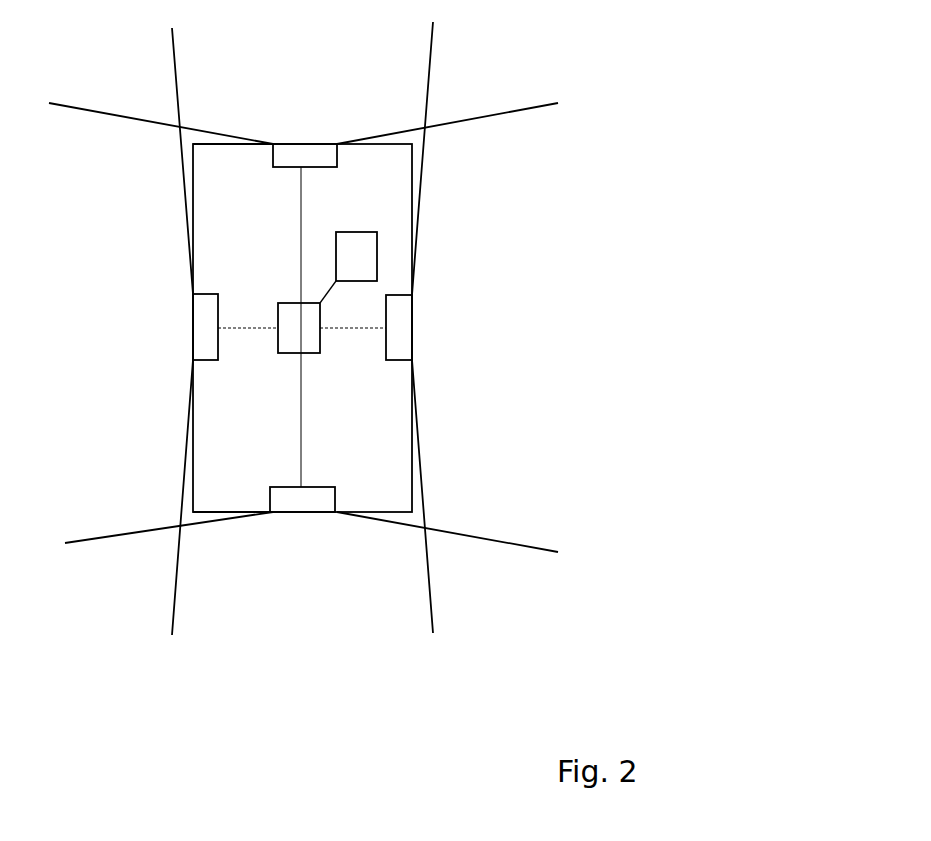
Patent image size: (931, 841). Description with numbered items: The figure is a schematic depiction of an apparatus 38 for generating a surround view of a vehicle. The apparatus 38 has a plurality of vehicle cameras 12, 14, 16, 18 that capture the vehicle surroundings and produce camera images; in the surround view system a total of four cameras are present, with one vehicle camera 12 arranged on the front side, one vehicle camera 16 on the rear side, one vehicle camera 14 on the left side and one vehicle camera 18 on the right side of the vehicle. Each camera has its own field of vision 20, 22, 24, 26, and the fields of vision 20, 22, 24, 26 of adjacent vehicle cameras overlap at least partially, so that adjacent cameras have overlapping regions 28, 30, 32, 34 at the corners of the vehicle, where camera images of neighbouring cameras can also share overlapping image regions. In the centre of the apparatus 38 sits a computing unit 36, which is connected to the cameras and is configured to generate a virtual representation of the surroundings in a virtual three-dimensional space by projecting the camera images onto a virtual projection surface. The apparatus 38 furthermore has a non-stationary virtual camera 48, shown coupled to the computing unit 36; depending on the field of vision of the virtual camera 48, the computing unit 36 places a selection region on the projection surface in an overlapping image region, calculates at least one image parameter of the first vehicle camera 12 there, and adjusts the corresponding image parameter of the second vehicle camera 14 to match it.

The vehicle camera 12 is at (328, 155).
The vehicle camera 14 is at (205, 325).
The vehicle camera 16 is at (317, 495).
The vehicle camera 18 is at (395, 352).
The field of vision 20 is at (255, 91).
The field of vision 22 is at (115, 331).
The field of vision 24 is at (255, 561).
The field of vision 26 is at (485, 327).
The overlapping region 28 is at (161, 89).
The overlapping region 30 is at (169, 556).
The overlapping region 32 is at (447, 561).
The overlapping region 34 is at (447, 89).
The computing unit 36 is at (287, 343).
The apparatus 38 is at (152, 217).
The virtual camera 48 is at (360, 257).